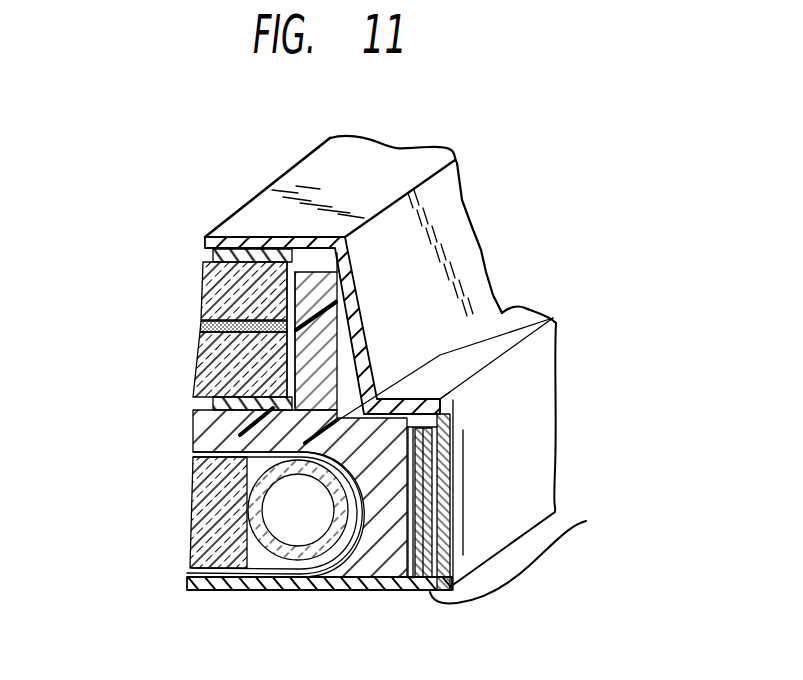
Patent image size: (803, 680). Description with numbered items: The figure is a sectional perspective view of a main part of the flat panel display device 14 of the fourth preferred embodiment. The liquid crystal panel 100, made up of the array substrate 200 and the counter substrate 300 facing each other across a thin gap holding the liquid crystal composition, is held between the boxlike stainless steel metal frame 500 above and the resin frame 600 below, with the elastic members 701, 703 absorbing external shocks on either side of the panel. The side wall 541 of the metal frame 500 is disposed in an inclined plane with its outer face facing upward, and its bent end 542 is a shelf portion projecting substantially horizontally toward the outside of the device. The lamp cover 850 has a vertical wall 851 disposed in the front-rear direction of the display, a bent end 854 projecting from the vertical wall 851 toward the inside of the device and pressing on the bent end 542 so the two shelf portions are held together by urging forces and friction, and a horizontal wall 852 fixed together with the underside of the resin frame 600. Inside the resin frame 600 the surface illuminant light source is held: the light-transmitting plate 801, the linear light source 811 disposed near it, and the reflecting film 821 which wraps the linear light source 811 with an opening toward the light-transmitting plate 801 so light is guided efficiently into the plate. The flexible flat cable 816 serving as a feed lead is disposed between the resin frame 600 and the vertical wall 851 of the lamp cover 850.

The flat panel display device 14 is at (535, 163).
The metal frame 500 is at (402, 152).
The side wall 541 is at (468, 244).
The bent end 542 is at (410, 427).
The elastic member 701 is at (237, 258).
The liquid crystal panel 100 is at (101, 268).
The counter substrate 300 is at (200, 294).
The array substrate 200 is at (200, 353).
The elastic member 703 is at (200, 400).
The resin frame 600 is at (205, 432).
The light-transmitting plate 801 is at (212, 495).
The linear light source 811 is at (249, 537).
The reflecting film 821 is at (302, 578).
The flexible flat cable 816 is at (431, 498).
The lamp cover 850 is at (640, 418).
The bent end 854 is at (433, 391).
The vertical wall 851 is at (540, 477).
The horizontal wall 852 is at (411, 550).